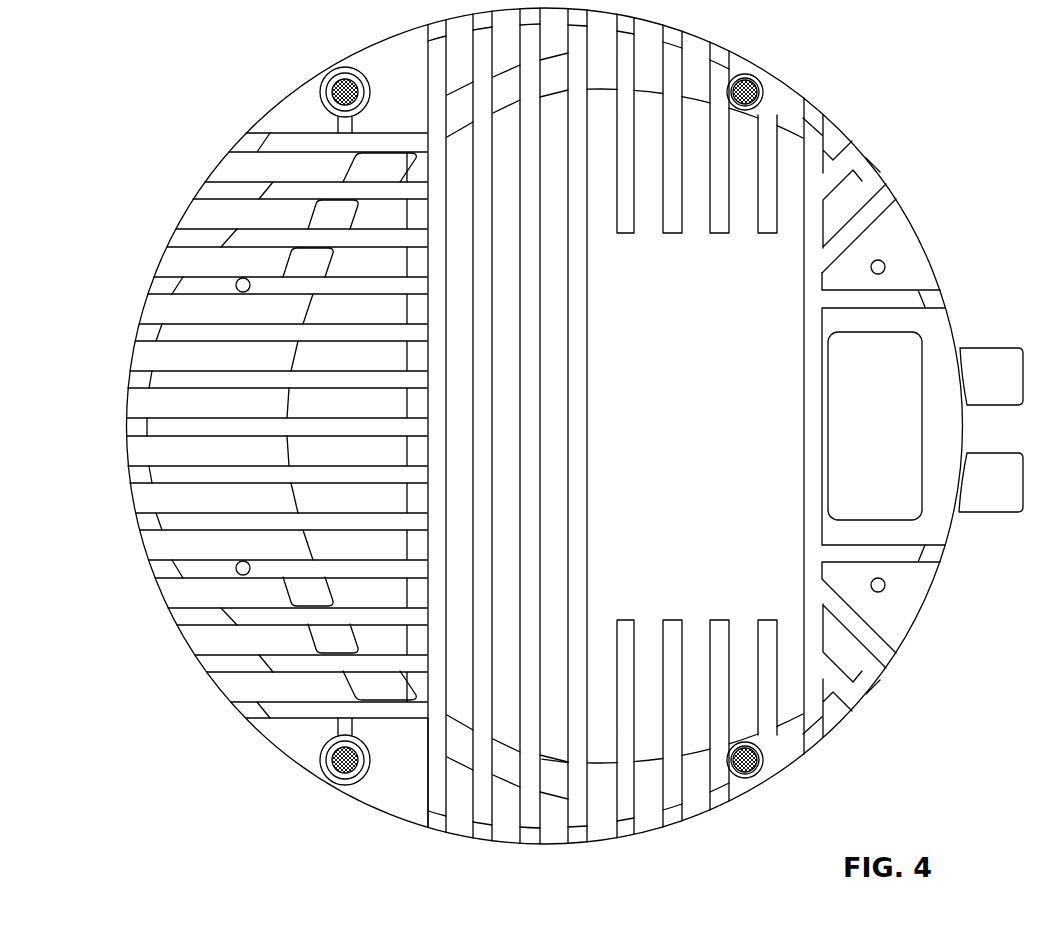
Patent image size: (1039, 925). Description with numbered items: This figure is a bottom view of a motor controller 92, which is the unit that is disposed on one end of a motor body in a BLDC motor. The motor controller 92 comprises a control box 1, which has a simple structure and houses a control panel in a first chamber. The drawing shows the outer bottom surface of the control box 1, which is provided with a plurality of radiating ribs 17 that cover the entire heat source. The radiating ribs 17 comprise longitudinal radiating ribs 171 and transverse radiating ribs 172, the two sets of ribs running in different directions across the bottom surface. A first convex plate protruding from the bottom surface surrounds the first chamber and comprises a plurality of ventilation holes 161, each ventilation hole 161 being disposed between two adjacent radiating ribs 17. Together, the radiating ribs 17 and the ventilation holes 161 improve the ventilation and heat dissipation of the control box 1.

The motor controller 92 is at (568, 443).
The control box 1 is at (695, 548).
The radiating ribs 17 is at (452, 426).
The longitudinal radiating ribs 171 is at (392, 658).
The transverse radiating ribs 172 is at (485, 712).
The ventilation holes 161 is at (558, 778).